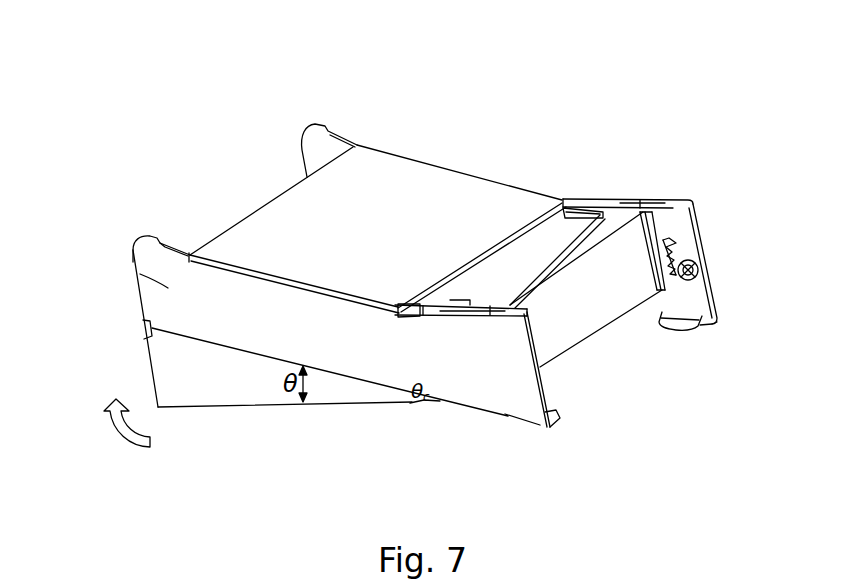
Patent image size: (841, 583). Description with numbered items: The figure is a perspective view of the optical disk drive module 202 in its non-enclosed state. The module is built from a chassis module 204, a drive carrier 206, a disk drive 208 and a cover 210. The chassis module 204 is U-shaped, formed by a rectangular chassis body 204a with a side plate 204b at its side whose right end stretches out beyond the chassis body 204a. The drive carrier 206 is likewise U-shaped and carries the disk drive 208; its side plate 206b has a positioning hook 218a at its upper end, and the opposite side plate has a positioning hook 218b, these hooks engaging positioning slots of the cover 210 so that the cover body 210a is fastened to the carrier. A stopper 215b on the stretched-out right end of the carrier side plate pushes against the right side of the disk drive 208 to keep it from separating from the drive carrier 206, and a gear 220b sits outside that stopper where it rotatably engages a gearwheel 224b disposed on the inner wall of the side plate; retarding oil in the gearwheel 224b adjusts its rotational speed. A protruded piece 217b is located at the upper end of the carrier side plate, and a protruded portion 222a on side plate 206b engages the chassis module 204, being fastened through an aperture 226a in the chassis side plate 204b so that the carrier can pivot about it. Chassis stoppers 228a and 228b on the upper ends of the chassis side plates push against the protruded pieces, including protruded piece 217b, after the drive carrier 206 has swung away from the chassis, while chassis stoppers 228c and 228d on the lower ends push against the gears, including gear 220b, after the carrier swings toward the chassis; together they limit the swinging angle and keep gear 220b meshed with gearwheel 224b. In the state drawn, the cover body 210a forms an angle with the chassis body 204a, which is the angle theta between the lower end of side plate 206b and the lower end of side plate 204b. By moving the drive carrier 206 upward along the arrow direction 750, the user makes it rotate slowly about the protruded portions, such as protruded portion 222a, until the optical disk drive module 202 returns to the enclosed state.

The optical disk drive module 202 is at (697, 61).
The chassis module 204 is at (274, 201).
The chassis body 204a is at (393, 170).
The side plate 204b is at (137, 270).
The drive carrier 206 is at (152, 370).
The side plate 206b is at (245, 382).
The disk drive 208 is at (596, 310).
The cover 210 is at (527, 268).
The cover body 210a is at (515, 255).
The stopper 215b is at (697, 205).
The protruded piece 217b is at (640, 212).
The positioning hook 218a is at (397, 316).
The positioning hook 218b is at (563, 202).
The gear 220b is at (668, 243).
The protruded portion 222a is at (410, 403).
The gearwheel 224b is at (698, 263).
The aperture 226a is at (432, 401).
The chassis stopper 228a is at (494, 320).
The chassis stopper 228b is at (650, 203).
The chassis stopper 228c is at (552, 423).
The chassis stopper 228d is at (708, 328).
The arrow direction 750 is at (118, 447).